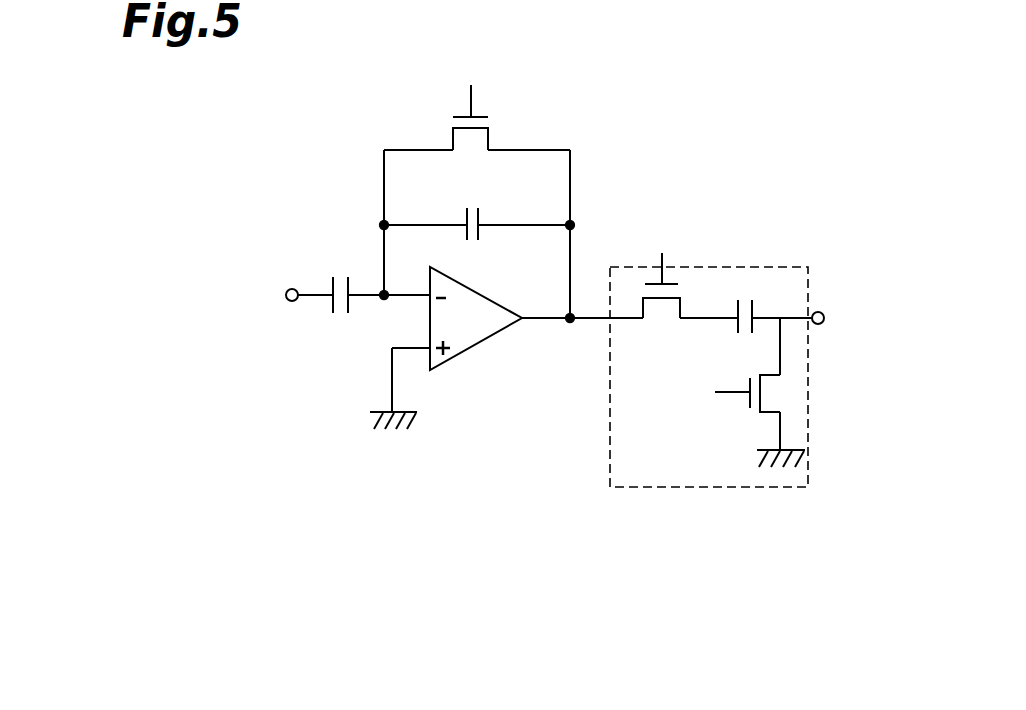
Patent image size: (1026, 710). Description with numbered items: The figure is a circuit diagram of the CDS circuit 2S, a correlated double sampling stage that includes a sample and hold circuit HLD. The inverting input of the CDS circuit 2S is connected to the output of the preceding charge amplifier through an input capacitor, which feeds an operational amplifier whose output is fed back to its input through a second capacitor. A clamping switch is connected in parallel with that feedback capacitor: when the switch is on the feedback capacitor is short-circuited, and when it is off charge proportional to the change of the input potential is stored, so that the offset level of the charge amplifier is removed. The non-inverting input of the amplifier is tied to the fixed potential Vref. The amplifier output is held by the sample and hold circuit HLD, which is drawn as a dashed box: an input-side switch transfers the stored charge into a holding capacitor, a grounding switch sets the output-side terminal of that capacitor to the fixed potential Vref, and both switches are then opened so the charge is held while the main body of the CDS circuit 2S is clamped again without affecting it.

The fixed potential Vref is at (379, 411).
The sample and hold circuit HLD is at (667, 488).
The CDS circuit 2S is at (714, 156).